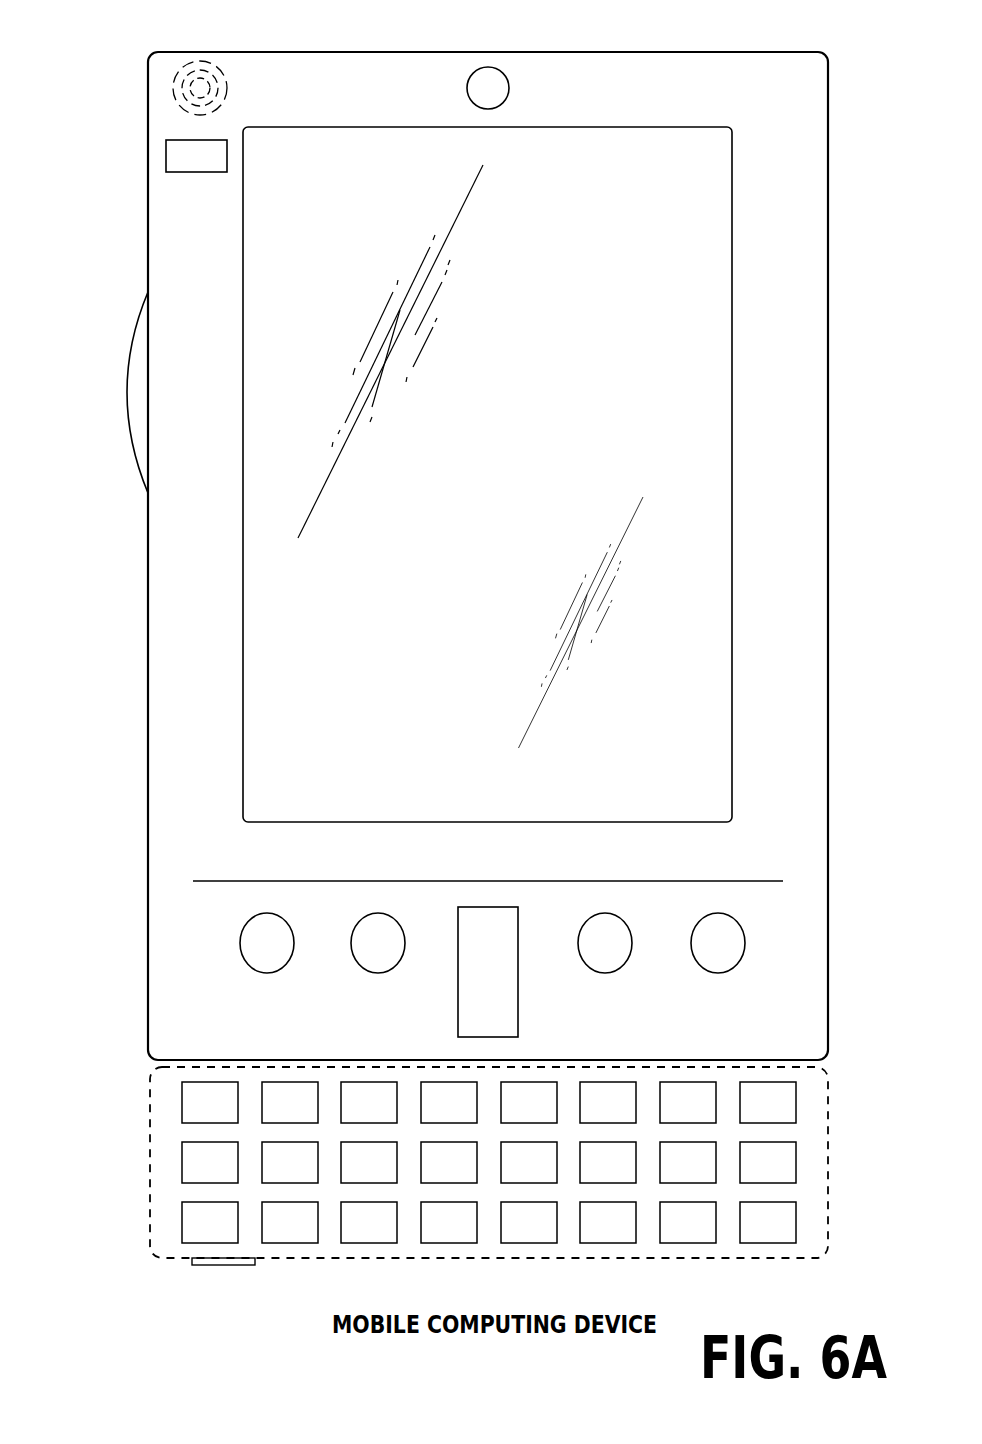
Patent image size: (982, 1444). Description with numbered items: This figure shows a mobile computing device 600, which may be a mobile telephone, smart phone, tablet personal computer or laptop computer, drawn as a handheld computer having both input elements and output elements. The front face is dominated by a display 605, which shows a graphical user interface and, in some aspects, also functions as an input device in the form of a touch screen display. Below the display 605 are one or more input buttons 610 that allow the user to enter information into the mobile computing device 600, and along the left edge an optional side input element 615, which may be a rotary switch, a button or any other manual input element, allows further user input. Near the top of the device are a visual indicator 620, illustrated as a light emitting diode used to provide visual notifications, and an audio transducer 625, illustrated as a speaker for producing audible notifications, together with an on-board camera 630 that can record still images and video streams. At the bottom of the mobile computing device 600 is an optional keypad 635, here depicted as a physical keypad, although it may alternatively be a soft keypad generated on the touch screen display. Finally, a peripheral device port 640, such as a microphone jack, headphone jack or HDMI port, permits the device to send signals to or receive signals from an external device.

The mobile computing device 600 is at (792, 51).
The display 605 is at (268, 653).
The input buttons 610 is at (265, 975).
The side input element 615 is at (127, 392).
The visual indicator 620 is at (166, 155).
The audio transducer 625 is at (172, 92).
The on-board camera 630 is at (490, 67).
The keypad 635 is at (160, 1162).
The peripheral device port 640 is at (198, 1267).